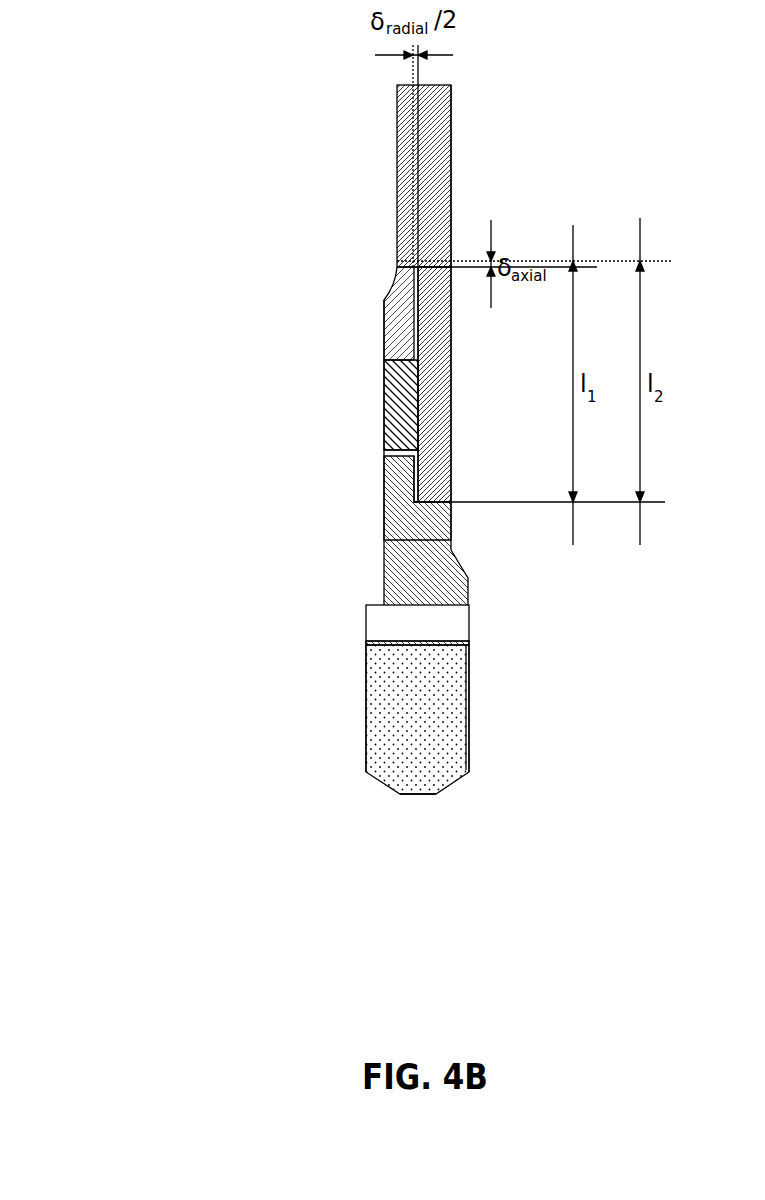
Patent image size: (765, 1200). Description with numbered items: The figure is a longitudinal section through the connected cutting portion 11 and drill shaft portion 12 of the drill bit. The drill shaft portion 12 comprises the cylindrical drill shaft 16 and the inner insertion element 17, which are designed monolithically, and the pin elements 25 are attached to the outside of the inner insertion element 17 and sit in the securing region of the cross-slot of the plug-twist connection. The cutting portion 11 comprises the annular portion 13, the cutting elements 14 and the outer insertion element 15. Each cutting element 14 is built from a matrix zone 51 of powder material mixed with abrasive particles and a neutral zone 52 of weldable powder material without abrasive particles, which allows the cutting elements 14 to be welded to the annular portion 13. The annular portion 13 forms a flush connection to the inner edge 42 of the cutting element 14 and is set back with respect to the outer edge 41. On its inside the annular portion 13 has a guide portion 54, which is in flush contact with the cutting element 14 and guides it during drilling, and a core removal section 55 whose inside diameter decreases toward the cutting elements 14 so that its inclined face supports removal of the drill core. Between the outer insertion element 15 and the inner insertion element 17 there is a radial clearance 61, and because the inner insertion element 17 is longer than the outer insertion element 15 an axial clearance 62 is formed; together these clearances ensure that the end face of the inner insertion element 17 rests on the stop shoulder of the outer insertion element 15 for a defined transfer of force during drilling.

The cutting portion 11 is at (327, 636).
The drill shaft portion 12 is at (307, 293).
The annular portion 13 is at (442, 455).
The cutting elements 14 is at (417, 847).
The outer insertion element 15 is at (397, 480).
The drill shaft 16 is at (428, 143).
The inner insertion element 17 is at (437, 373).
The pin elements 25 is at (400, 411).
The outer edge 41 is at (366, 686).
The inner edge 42 is at (470, 686).
The matrix zone 51 is at (418, 717).
The neutral zone 52 is at (382, 624).
The guide portion 54 is at (470, 597).
The core removal section 55 is at (467, 570).
The radial clearance 61 is at (423, 475).
The axial clearance 62 is at (392, 261).